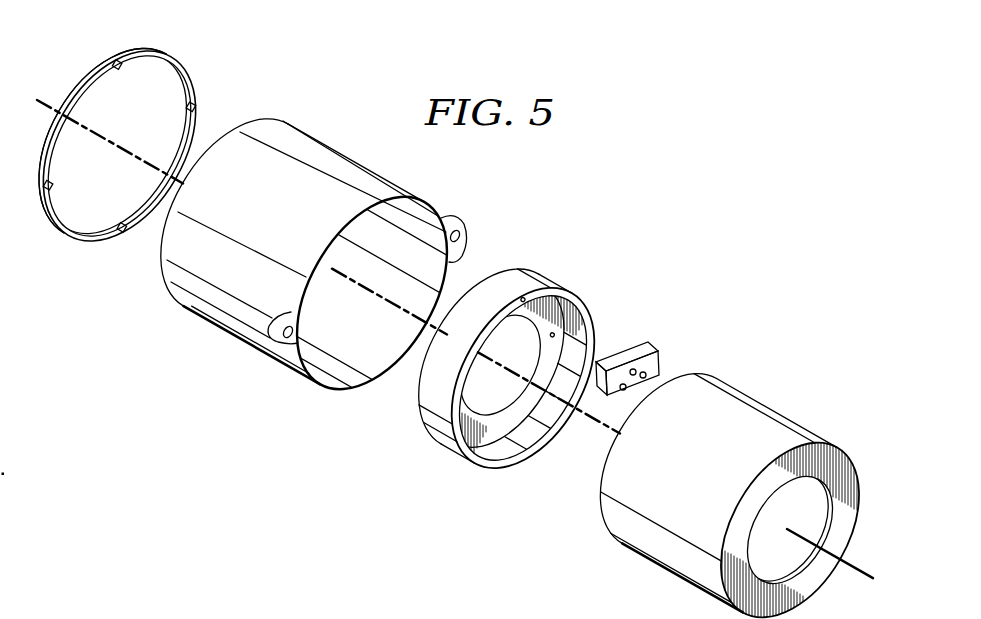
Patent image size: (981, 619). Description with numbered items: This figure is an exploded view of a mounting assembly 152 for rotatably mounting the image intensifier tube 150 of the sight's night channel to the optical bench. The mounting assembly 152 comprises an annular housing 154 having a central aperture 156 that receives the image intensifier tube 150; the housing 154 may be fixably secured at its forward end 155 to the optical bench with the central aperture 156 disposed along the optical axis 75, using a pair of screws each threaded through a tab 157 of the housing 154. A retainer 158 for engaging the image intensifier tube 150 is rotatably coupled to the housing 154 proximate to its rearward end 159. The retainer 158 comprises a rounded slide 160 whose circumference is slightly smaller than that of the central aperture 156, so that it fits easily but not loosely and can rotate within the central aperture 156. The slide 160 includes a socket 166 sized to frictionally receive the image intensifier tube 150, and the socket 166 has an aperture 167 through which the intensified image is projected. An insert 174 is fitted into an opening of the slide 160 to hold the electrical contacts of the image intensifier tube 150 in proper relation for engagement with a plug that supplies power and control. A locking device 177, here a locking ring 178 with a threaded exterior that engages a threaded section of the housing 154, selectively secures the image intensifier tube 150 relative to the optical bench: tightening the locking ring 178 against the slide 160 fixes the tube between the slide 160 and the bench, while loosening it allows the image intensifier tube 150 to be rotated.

The optical axis 75 is at (856, 578).
The image intensifier tube 150 is at (667, 553).
The mounting assembly 152 is at (510, 380).
The annular housing 154 is at (315, 272).
The forward end 155 is at (333, 386).
The central aperture 156 is at (428, 264).
The tab 157 is at (457, 223).
The retainer 158 is at (637, 322).
The rearward end 159 is at (164, 272).
The rounded slide 160 is at (449, 450).
The socket 166 is at (515, 447).
The aperture 167 is at (497, 390).
The insert 174 is at (638, 352).
The locking device 177 is at (113, 164).
The locking ring 178 is at (80, 243).